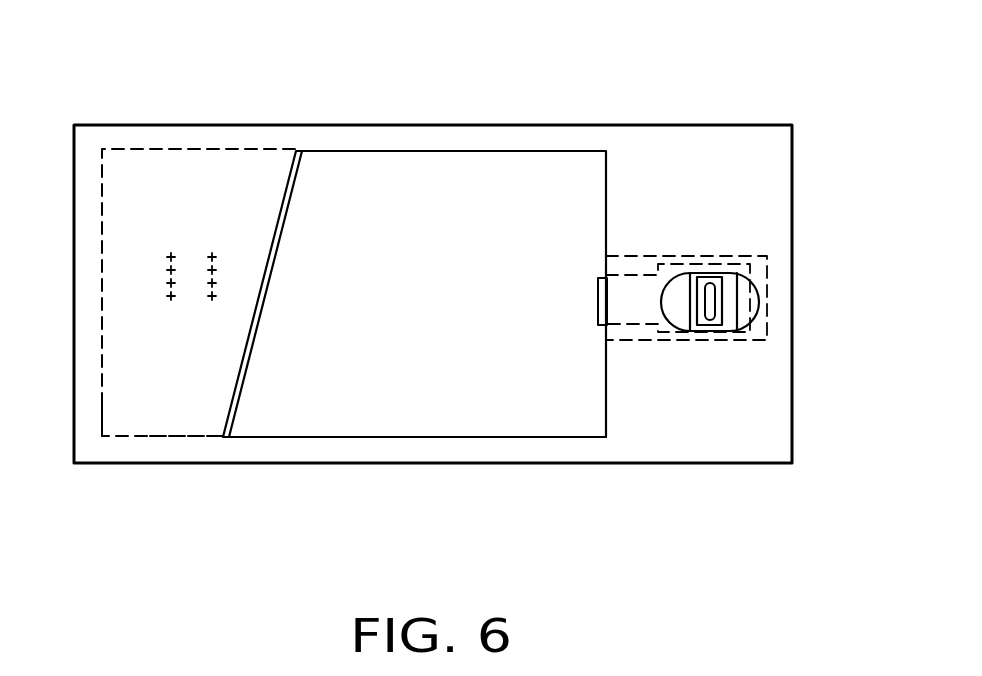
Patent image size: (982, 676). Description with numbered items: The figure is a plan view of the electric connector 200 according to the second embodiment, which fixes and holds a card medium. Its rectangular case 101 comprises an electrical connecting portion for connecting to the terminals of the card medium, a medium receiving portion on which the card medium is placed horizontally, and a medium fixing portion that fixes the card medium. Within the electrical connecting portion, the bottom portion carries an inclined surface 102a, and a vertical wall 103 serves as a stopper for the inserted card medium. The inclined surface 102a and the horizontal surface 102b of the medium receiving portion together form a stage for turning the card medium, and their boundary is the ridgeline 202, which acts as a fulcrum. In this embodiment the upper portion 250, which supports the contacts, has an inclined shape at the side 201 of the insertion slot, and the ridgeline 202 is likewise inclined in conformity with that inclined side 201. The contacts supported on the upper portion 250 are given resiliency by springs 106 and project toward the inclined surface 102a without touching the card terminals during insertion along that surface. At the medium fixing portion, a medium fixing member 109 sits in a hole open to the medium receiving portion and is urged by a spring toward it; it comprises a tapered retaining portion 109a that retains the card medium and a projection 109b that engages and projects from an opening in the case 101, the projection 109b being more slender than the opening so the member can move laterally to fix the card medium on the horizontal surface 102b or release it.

The electric connector 200 is at (783, 42).
The case 101 is at (652, 135).
The inclined surface 102a is at (203, 428).
The horizontal surface 102b is at (490, 430).
The vertical wall 103 is at (100, 403).
The springs 106 is at (171, 305).
The medium fixing member 109 is at (726, 273).
The tapered retaining portion 109a is at (597, 292).
The projection 109b is at (712, 326).
The side of insertion slot 201 is at (275, 228).
The ridgeline 202 is at (268, 280).
The upper portion 250 is at (184, 174).